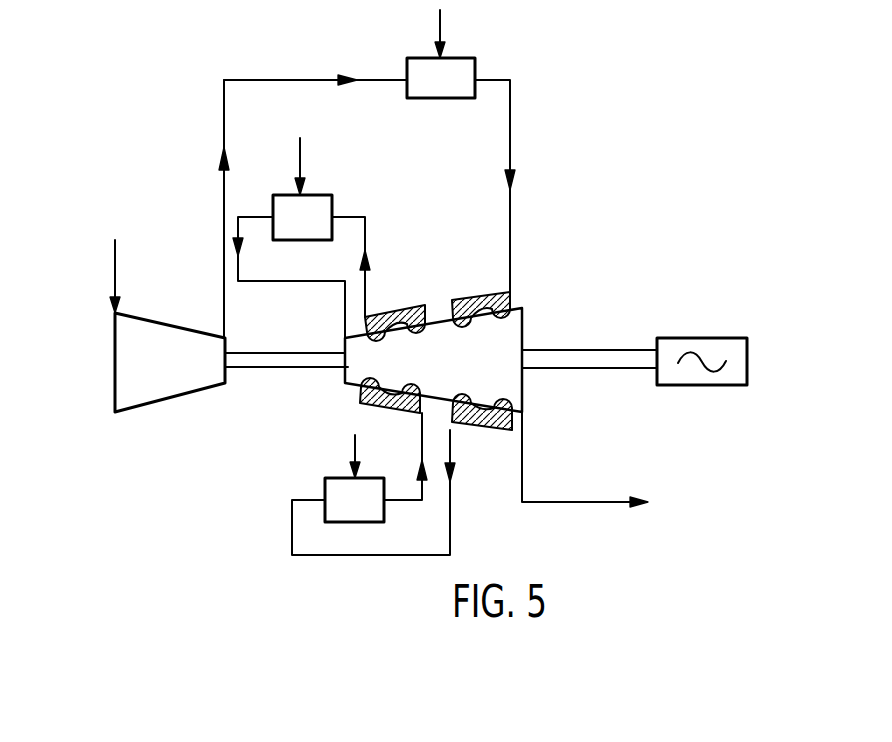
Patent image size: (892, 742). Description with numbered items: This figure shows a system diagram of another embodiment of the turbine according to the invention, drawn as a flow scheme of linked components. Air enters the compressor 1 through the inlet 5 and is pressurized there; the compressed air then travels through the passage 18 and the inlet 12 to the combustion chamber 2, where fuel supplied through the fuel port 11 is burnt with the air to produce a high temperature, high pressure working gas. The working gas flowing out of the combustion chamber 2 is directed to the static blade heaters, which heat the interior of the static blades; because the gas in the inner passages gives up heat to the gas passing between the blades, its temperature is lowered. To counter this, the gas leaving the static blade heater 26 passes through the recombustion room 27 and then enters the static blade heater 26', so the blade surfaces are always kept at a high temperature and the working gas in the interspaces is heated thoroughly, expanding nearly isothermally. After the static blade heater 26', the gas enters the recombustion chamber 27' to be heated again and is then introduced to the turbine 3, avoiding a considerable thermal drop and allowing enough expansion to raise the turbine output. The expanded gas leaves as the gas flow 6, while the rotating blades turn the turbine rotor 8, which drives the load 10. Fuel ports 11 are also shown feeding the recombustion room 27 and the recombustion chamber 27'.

The compressor 1 is at (178, 328).
The combustion chamber 2 is at (478, 58).
The turbine 3 is at (508, 348).
The inlet 5 is at (115, 269).
The gas flow 6 is at (586, 502).
The turbine rotor 8 is at (600, 350).
The load 10 is at (695, 338).
The fuel port 11 is at (444, 22).
The inlet 12 is at (318, 80).
The passage 18 is at (223, 187).
The static blade heater 26 is at (481, 278).
The static blade heater 26' is at (396, 293).
The recombustion room 27 is at (359, 484).
The recombustion chamber 27' is at (323, 244).